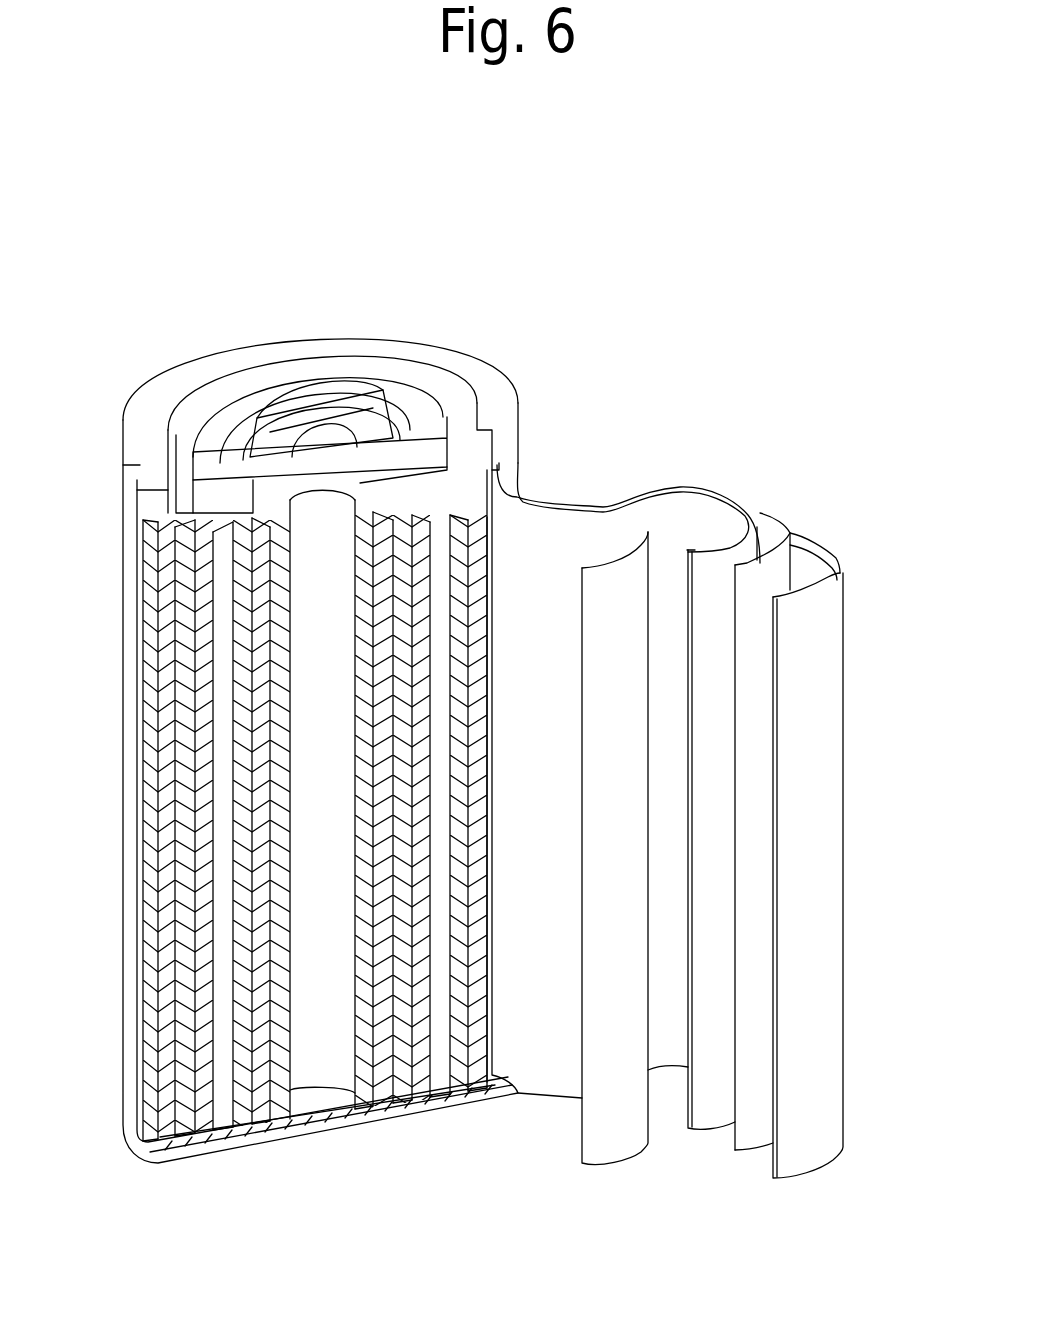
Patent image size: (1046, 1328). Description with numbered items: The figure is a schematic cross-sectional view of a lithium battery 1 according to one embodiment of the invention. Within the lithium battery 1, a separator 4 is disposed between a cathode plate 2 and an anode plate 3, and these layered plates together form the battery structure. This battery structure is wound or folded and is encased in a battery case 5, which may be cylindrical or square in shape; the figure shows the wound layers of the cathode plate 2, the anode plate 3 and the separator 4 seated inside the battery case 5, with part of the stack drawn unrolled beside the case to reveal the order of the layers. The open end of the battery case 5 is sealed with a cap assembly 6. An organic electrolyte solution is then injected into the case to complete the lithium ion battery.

The lithium battery 1 is at (800, 458).
The cathode plate 2 is at (827, 688).
The anode plate 3 is at (710, 567).
The separator 4 is at (783, 567).
The battery case 5 is at (123, 1066).
The cap assembly 6 is at (340, 385).